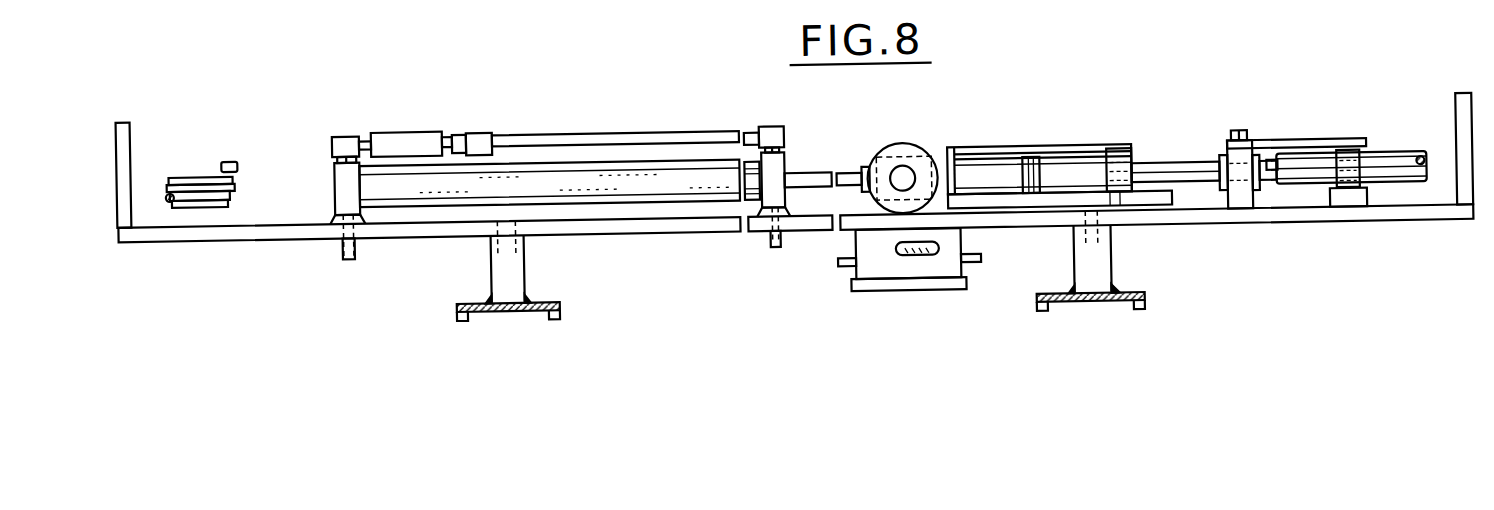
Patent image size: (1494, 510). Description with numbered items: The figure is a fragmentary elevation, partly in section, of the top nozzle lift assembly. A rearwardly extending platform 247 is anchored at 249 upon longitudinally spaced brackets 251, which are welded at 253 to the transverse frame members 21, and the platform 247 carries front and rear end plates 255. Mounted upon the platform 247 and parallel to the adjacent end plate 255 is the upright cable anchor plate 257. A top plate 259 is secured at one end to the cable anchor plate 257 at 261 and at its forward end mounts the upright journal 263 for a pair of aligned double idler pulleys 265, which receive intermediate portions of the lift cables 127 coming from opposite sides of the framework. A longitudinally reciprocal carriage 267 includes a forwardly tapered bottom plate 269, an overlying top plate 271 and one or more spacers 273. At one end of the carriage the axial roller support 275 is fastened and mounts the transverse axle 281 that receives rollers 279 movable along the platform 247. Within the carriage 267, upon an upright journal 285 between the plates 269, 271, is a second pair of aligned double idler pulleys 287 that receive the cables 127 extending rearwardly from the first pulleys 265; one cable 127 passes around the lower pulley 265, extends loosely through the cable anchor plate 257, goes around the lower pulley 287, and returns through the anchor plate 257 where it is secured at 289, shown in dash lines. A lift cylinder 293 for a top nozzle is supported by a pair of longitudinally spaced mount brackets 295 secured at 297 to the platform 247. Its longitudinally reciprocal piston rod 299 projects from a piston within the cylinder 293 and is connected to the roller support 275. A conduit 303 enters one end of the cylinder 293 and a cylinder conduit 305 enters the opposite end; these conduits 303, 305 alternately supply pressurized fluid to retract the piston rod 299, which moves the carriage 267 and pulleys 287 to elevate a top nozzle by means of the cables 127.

The transverse frame members 21 is at (558, 306).
The lift cables 127 is at (1426, 168).
The platform 247 is at (653, 224).
The anchor 249 is at (520, 222).
The brackets 251 is at (490, 264).
The weld 253 is at (1114, 284).
The end plates 255 is at (134, 128).
The cable anchor plate 257 is at (1265, 161).
The top plate 259 is at (1307, 144).
The securement 261 is at (1241, 138).
The upright journal 263 is at (1346, 159).
The double idler pulleys 265 is at (1392, 163).
The carriage 267 is at (1074, 129).
The bottom plate 269 is at (1050, 205).
The top plate 271 is at (1083, 150).
The spacers 273 is at (1137, 163).
The roller support 275 is at (922, 180).
The rollers 279 is at (878, 148).
The transverse axle 281 is at (903, 176).
The upright journal 285 is at (1038, 164).
The double idler pulleys 287 is at (1096, 172).
The cable securement 289 is at (1262, 158).
The lift cylinder 293 is at (597, 124).
The mount brackets 295 is at (330, 224).
The securement 297 is at (792, 187).
The piston rod 299 is at (815, 178).
The conduit 303 is at (768, 239).
The cylinder conduit 305 is at (353, 245).